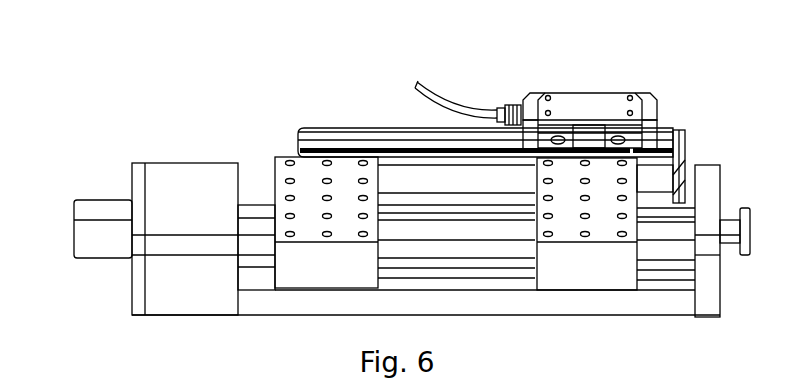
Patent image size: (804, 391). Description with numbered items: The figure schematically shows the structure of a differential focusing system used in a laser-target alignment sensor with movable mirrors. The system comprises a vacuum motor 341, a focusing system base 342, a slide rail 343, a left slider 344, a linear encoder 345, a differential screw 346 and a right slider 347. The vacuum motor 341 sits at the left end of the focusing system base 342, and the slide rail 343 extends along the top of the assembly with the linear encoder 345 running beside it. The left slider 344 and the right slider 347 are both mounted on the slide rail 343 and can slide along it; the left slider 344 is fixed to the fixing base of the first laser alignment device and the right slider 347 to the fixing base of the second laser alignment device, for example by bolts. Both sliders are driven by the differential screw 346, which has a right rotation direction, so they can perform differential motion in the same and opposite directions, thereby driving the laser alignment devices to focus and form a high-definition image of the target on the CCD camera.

The vacuum motor 341 is at (108, 210).
The focusing system base 342 is at (193, 208).
The slide rail 343 is at (265, 205).
The left slider 344 is at (337, 198).
The linear encoder 345 is at (453, 128).
The differential screw 346 is at (492, 228).
The right slider 347 is at (608, 208).